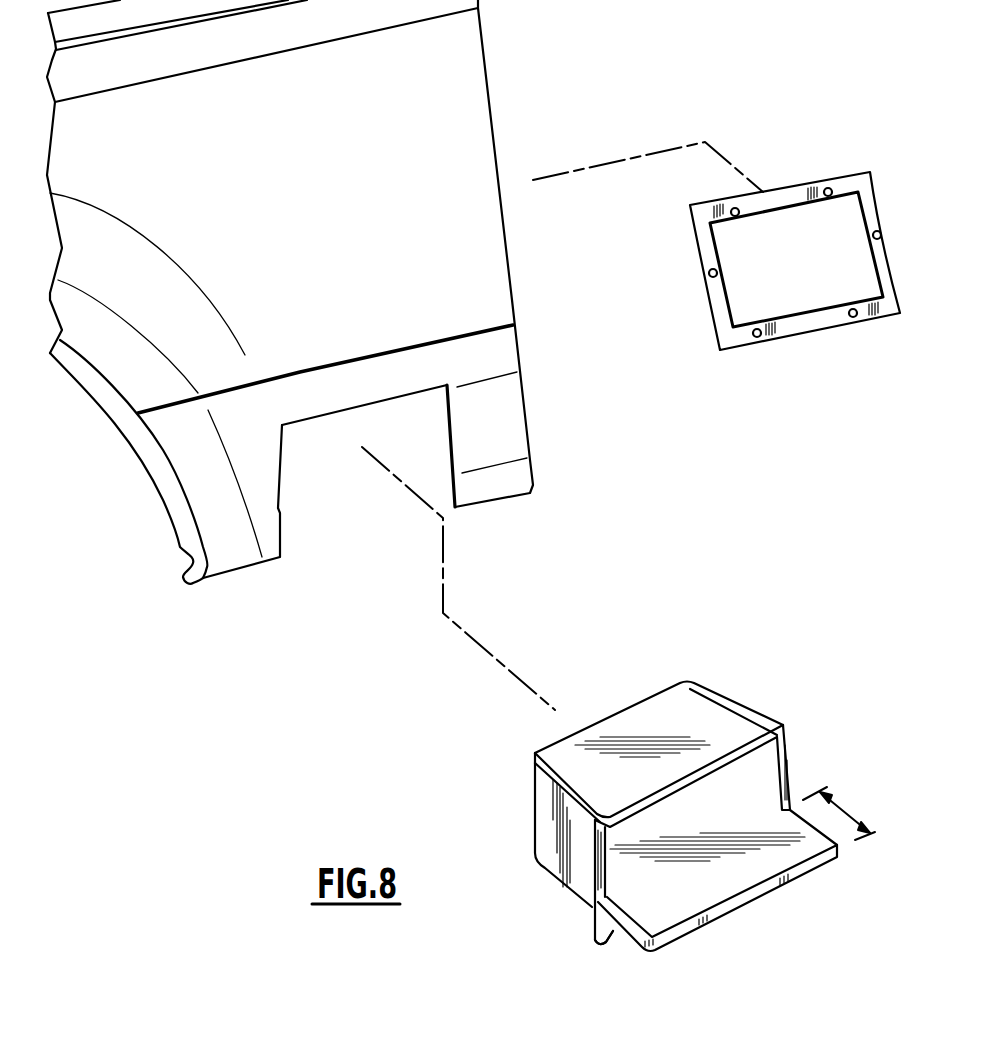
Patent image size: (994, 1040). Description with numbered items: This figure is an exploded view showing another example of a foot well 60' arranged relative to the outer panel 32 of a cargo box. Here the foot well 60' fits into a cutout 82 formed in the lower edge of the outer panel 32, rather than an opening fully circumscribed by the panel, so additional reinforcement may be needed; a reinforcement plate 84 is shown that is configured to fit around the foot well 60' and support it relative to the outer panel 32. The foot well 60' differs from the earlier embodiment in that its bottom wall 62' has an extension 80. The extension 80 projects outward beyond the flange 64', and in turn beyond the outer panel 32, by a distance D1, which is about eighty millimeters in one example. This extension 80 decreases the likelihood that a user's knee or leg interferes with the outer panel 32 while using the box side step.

The outer panel 32 is at (443, 105).
The reinforcement plate 84 is at (847, 187).
The cutout 82 is at (373, 519).
The foot well 60' is at (703, 804).
The flange 64' is at (703, 755).
The bottom wall 62' is at (717, 880).
The extension 80 is at (602, 952).
The distance D1 is at (850, 810).